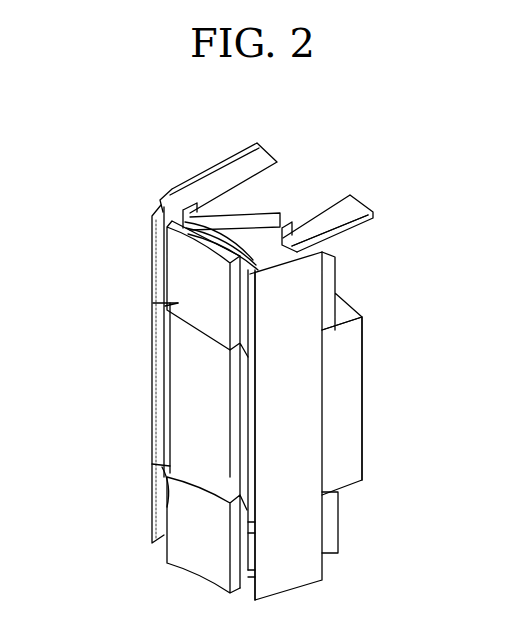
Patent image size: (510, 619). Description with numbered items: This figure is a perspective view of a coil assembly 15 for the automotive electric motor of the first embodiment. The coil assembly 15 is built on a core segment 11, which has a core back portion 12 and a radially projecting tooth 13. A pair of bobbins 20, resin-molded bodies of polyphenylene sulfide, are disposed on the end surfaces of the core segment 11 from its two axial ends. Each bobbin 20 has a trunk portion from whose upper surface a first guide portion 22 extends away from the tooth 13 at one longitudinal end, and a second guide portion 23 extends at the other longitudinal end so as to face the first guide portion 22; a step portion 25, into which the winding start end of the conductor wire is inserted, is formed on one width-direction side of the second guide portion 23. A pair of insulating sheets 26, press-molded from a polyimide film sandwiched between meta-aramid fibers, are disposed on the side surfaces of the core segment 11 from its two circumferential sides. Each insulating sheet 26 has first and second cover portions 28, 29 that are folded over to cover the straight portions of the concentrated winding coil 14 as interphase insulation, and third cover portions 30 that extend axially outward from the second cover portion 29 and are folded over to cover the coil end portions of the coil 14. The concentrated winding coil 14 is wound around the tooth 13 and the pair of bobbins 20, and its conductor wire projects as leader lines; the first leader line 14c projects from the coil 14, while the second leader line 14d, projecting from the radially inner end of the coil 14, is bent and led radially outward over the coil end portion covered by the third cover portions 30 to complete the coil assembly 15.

The coil assembly 15 is at (76, 122).
The core segment 11 is at (175, 390).
The core back portion 12 is at (350, 418).
The tooth 13 is at (190, 438).
The concentrated winding coil 14 is at (252, 256).
The first leader line 14c is at (355, 207).
The second leader line 14d is at (255, 158).
The bobbin 20 is at (180, 280).
The first guide portion 22 is at (182, 302).
The second guide portion 23 is at (328, 278).
The step portion 25 is at (330, 243).
The insulating sheet 26 is at (150, 243).
The first cover portion 28 is at (162, 358).
The second cover portion 29 is at (150, 507).
The third cover portion 30 is at (218, 212).